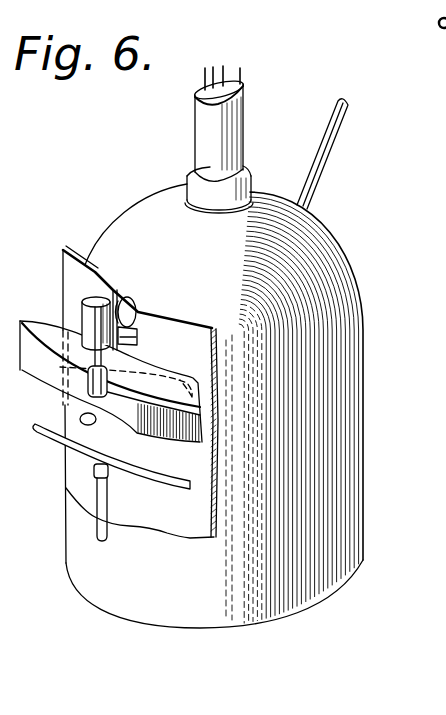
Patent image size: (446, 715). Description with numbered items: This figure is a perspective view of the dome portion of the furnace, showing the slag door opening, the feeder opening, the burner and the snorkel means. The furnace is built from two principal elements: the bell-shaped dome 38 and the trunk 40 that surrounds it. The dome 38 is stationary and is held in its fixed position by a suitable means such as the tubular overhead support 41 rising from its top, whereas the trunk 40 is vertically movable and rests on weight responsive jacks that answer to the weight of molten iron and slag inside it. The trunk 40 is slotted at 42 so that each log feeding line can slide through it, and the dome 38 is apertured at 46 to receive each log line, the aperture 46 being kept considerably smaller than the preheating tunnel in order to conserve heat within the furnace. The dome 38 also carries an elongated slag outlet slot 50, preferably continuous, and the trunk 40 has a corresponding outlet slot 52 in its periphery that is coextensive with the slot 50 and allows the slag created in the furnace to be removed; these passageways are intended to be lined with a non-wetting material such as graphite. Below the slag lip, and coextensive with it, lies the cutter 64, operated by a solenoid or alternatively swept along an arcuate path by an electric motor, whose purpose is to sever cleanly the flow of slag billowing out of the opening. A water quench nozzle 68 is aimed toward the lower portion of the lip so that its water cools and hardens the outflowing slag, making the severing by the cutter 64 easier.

The dome 38 is at (347, 268).
The tubular overhead support 41 is at (247, 170).
The trunk 40 is at (67, 247).
The slot 42 is at (131, 340).
The aperture 46 is at (131, 300).
The elongated slag outlet slot 50 is at (111, 381).
The trunk outlet slot 52 is at (82, 316).
The cutter 64 is at (172, 445).
The water quench nozzle 68 is at (153, 487).